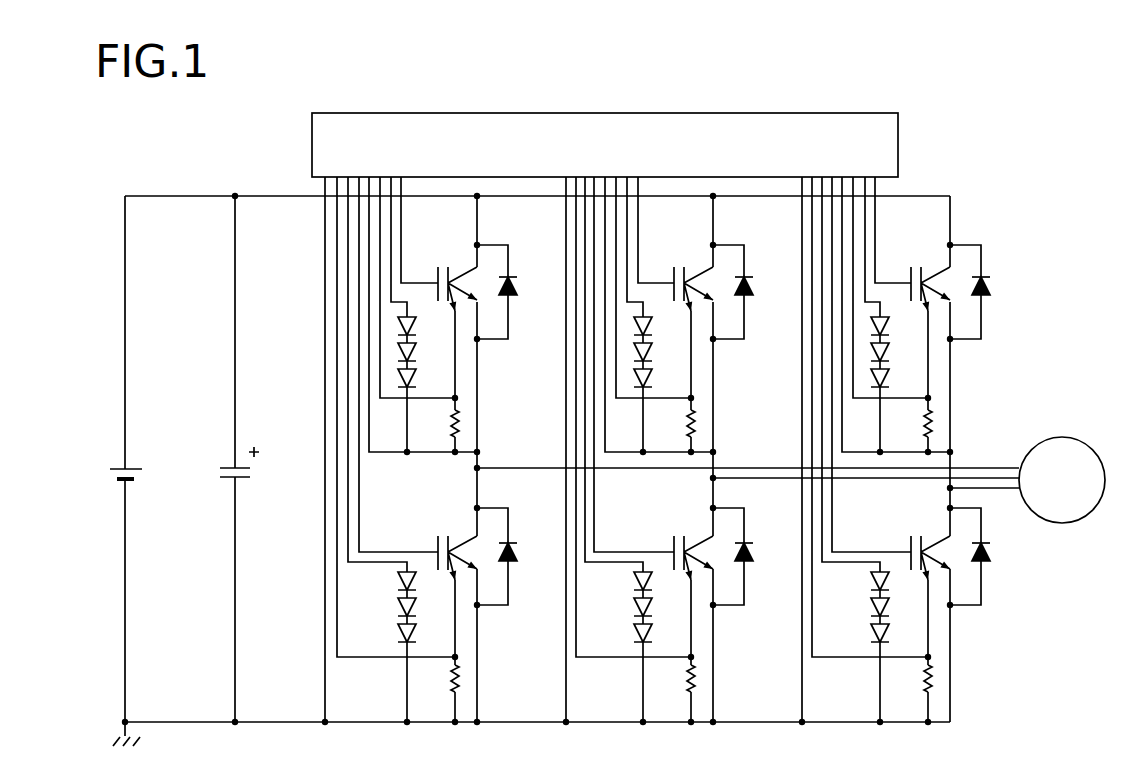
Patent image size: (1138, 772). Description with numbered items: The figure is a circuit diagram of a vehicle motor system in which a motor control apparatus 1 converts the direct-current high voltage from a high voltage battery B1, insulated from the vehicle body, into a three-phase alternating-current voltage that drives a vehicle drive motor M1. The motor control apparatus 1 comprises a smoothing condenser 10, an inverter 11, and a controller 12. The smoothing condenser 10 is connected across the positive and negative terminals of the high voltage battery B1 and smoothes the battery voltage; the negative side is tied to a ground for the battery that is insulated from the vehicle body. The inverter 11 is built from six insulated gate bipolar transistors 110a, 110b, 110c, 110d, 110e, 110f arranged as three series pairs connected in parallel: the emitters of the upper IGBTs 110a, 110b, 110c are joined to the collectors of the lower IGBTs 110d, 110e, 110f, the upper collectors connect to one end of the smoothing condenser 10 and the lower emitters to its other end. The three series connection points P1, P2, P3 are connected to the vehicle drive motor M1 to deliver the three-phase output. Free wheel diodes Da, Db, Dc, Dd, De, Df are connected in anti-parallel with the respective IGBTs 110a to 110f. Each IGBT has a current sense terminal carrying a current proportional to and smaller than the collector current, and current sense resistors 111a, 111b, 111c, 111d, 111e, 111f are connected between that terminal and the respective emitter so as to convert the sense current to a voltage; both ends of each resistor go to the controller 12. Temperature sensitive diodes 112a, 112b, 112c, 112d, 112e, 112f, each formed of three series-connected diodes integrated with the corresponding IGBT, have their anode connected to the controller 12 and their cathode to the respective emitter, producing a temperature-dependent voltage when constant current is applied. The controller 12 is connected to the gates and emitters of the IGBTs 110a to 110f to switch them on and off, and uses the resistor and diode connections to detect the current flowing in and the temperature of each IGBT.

The motor control apparatus 1 is at (898, 106).
The smoothing condenser 10 is at (227, 462).
The inverter 11 is at (953, 189).
The controller 12 is at (676, 116).
The high voltage battery B1 is at (112, 462).
The vehicle drive motor M1 is at (1060, 445).
The series connection point P1 is at (481, 470).
The series connection point P2 is at (717, 481).
The series connection point P3 is at (954, 490).
The insulated gate bipolar transistor 110a is at (437, 264).
The insulated gate bipolar transistor 110b is at (683, 265).
The insulated gate bipolar transistor 110c is at (920, 265).
The insulated gate bipolar transistor 110d is at (437, 530).
The insulated gate bipolar transistor 110e is at (683, 533).
The insulated gate bipolar transistor 110f is at (922, 533).
The current sense resistor 111a is at (462, 426).
The current sense resistor 111b is at (741, 428).
The current sense resistor 111c is at (974, 419).
The current sense resistor 111d is at (447, 689).
The current sense resistor 111e is at (639, 682).
The current sense resistor 111f is at (877, 682).
The temperature sensitive diode 112a is at (418, 379).
The temperature sensitive diode 112b is at (709, 384).
The temperature sensitive diode 112c is at (945, 384).
The temperature sensitive diode 112d is at (418, 636).
The temperature sensitive diode 112e is at (709, 647).
The temperature sensitive diode 112f is at (944, 647).
The free wheel diode Da is at (518, 291).
The free wheel diode Db is at (753, 292).
The free wheel diode Dc is at (989, 292).
The free wheel diode Dd is at (518, 558).
The free wheel diode De is at (753, 556).
The free wheel diode Df is at (988, 556).